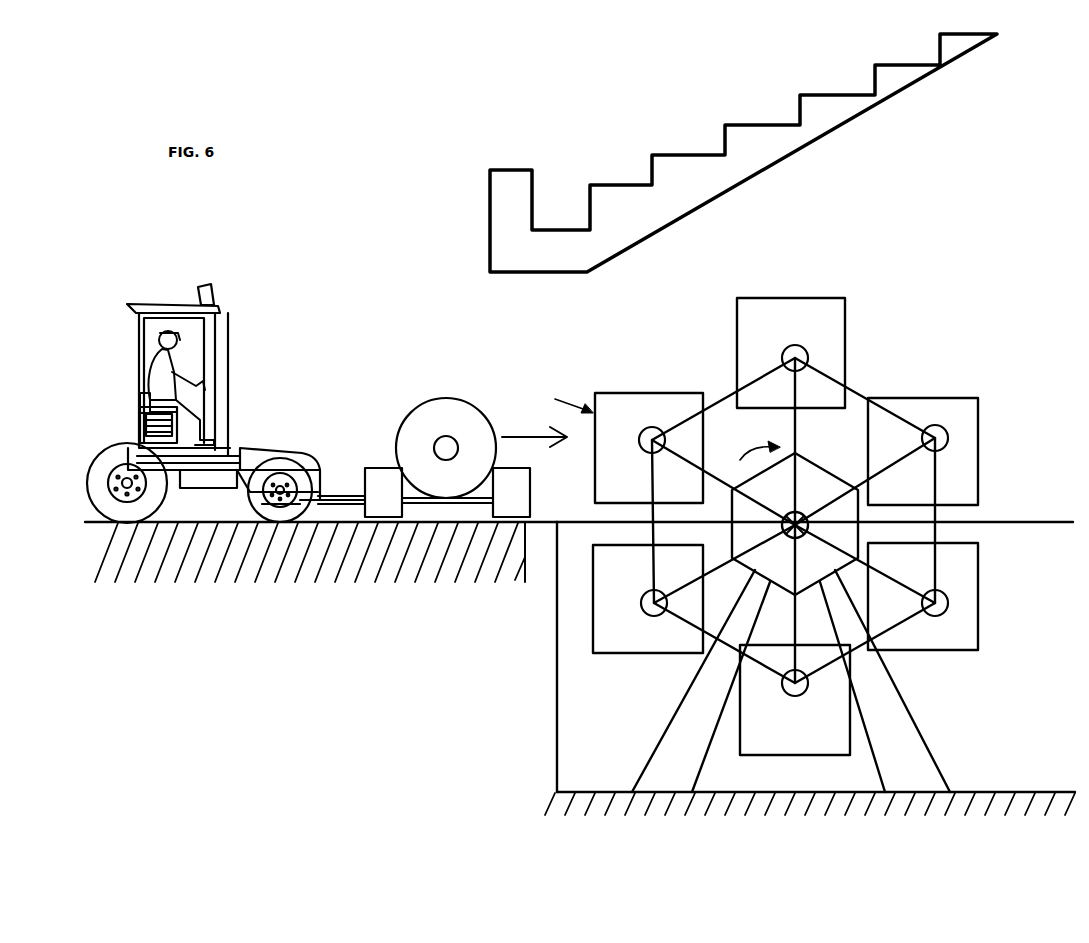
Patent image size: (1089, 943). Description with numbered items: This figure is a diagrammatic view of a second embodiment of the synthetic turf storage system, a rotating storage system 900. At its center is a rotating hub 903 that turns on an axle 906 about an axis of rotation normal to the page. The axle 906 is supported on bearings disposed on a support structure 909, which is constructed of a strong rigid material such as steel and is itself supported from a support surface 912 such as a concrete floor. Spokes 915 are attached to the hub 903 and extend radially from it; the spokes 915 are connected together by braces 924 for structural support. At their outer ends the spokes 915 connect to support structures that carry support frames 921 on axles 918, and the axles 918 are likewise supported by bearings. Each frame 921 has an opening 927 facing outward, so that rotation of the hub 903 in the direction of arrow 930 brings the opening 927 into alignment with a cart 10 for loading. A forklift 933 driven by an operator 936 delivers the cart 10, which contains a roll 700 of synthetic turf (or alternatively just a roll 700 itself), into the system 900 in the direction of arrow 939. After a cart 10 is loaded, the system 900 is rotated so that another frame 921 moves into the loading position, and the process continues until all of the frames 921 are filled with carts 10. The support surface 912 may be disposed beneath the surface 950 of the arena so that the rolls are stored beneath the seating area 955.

The cart 10 is at (381, 478).
The roll 700 is at (440, 426).
The rotating storage system 900 is at (790, 508).
The rotating hub 903 is at (835, 513).
The axle 906 is at (820, 467).
The support structure 909 is at (690, 725).
The support surface 912 is at (595, 792).
The spokes 915 is at (795, 413).
The axles 918 is at (797, 347).
The support frames 921 is at (614, 412).
The braces 924 is at (690, 415).
The opening 927 is at (561, 400).
The arrow 930 is at (756, 440).
The forklift 933 is at (228, 467).
The operator 936 is at (153, 369).
The arrow 939 is at (522, 437).
The surface of the arena 950 is at (222, 522).
The seating area 955 is at (686, 175).